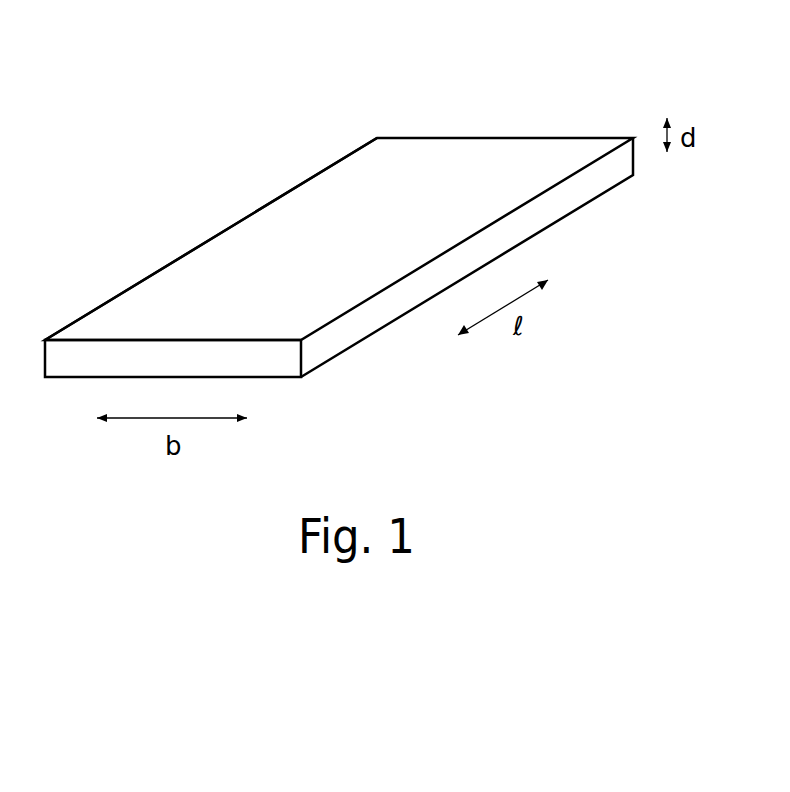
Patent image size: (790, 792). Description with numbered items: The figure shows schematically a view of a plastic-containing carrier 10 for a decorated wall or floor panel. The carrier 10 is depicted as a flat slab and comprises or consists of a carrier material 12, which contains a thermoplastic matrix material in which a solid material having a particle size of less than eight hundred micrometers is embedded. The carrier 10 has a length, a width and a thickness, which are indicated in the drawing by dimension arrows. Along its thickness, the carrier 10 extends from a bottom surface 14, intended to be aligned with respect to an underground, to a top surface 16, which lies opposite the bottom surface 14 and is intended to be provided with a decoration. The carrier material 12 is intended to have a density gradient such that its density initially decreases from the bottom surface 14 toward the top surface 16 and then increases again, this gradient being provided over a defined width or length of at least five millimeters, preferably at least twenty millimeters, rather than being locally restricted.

The carrier 10 is at (339, 245).
The carrier material 12 is at (452, 157).
The bottom surface 14 is at (273, 378).
The top surface 16 is at (220, 265).